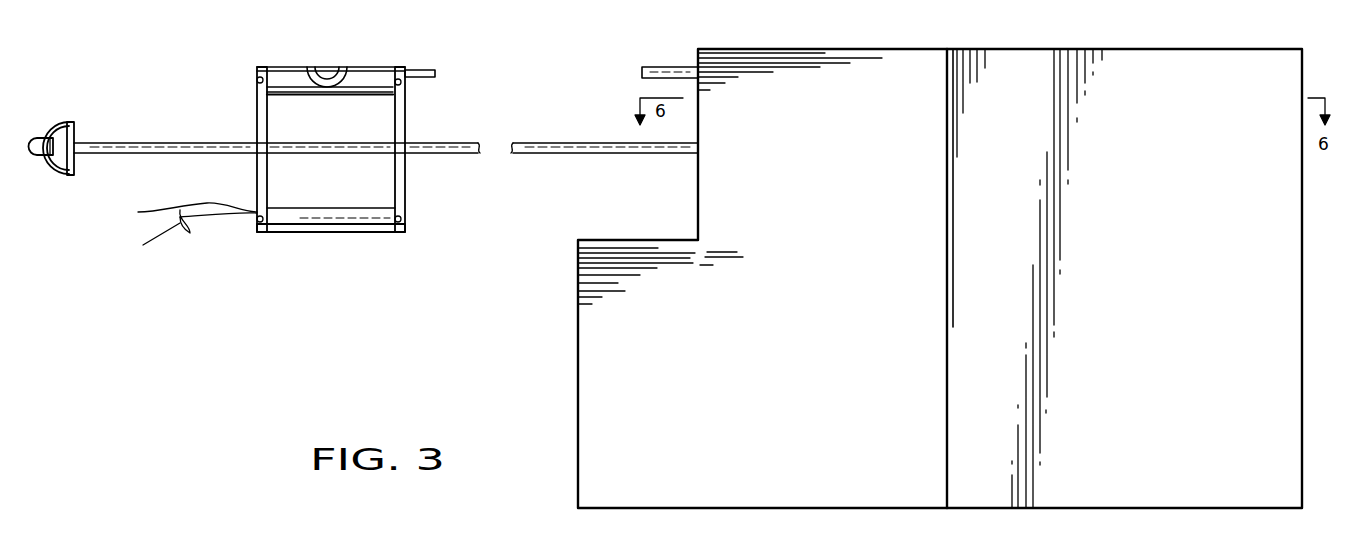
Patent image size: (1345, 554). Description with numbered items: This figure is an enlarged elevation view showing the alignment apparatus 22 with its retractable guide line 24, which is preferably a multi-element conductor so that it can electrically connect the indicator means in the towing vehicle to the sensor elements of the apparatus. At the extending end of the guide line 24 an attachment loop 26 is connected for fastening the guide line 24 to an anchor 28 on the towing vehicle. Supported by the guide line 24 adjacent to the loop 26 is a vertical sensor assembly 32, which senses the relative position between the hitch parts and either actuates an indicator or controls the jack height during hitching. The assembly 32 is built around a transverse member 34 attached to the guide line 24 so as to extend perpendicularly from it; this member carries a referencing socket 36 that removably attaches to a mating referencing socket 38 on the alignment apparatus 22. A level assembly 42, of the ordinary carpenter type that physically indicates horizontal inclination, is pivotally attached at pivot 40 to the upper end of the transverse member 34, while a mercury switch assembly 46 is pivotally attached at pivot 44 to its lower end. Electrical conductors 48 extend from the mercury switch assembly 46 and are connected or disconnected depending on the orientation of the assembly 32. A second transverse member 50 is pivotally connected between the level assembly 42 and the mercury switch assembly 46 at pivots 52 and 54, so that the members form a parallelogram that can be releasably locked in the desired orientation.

The alignment apparatus 22 is at (767, 49).
The guide line 24 is at (145, 143).
The attachment loop 26 is at (57, 175).
The anchor 28 is at (40, 137).
The vertical sensor assembly 32 is at (373, 65).
The transverse member 34 is at (405, 123).
The referencing socket 36 is at (428, 69).
The mating referencing socket 38 is at (660, 67).
The pivot 40 is at (403, 84).
The level assembly 42 is at (295, 67).
The pivot 44 is at (407, 217).
The mercury switch assembly 46 is at (366, 232).
The electrical conductors 48 is at (197, 232).
The second transverse member 50 is at (257, 113).
The pivot 52 is at (257, 80).
The pivot 54 is at (257, 221).